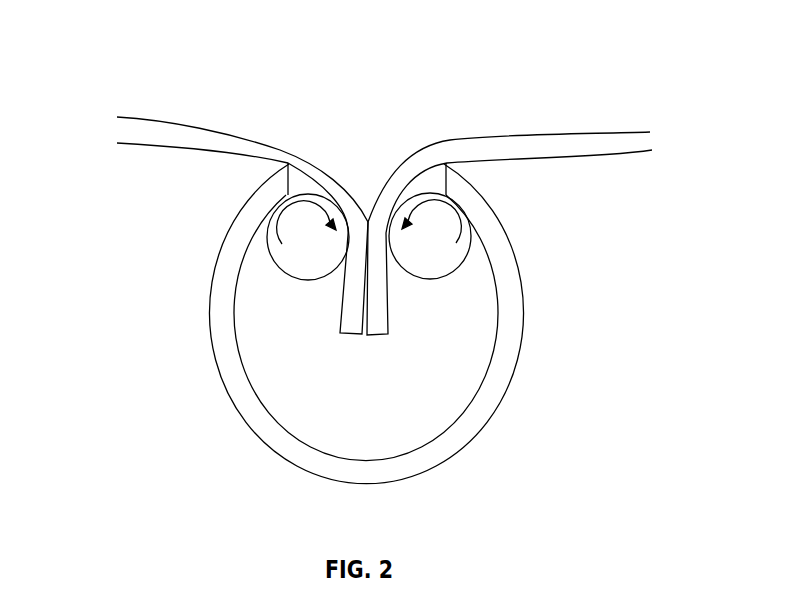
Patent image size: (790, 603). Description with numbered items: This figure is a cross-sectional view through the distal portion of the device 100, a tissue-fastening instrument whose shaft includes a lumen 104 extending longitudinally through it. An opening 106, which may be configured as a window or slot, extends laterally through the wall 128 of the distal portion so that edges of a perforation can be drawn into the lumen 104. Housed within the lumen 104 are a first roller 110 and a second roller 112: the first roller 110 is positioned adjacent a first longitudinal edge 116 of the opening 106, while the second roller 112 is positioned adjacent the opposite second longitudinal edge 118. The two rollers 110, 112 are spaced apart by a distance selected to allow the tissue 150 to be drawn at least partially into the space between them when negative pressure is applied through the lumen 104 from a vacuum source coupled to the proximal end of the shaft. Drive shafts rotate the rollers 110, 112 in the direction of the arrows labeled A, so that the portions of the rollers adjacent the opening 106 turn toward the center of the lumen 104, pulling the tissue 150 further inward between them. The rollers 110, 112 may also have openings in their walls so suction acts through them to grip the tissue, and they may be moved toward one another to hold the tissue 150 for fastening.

The device 100 is at (314, 97).
The lumen 104 is at (398, 398).
The opening 106 is at (428, 183).
The first roller 110 is at (290, 243).
The second roller 112 is at (432, 243).
The first longitudinal edge 116 is at (287, 182).
The second longitudinal edge 118 is at (447, 182).
The wall 128 is at (237, 372).
The tissue 150 is at (375, 295).